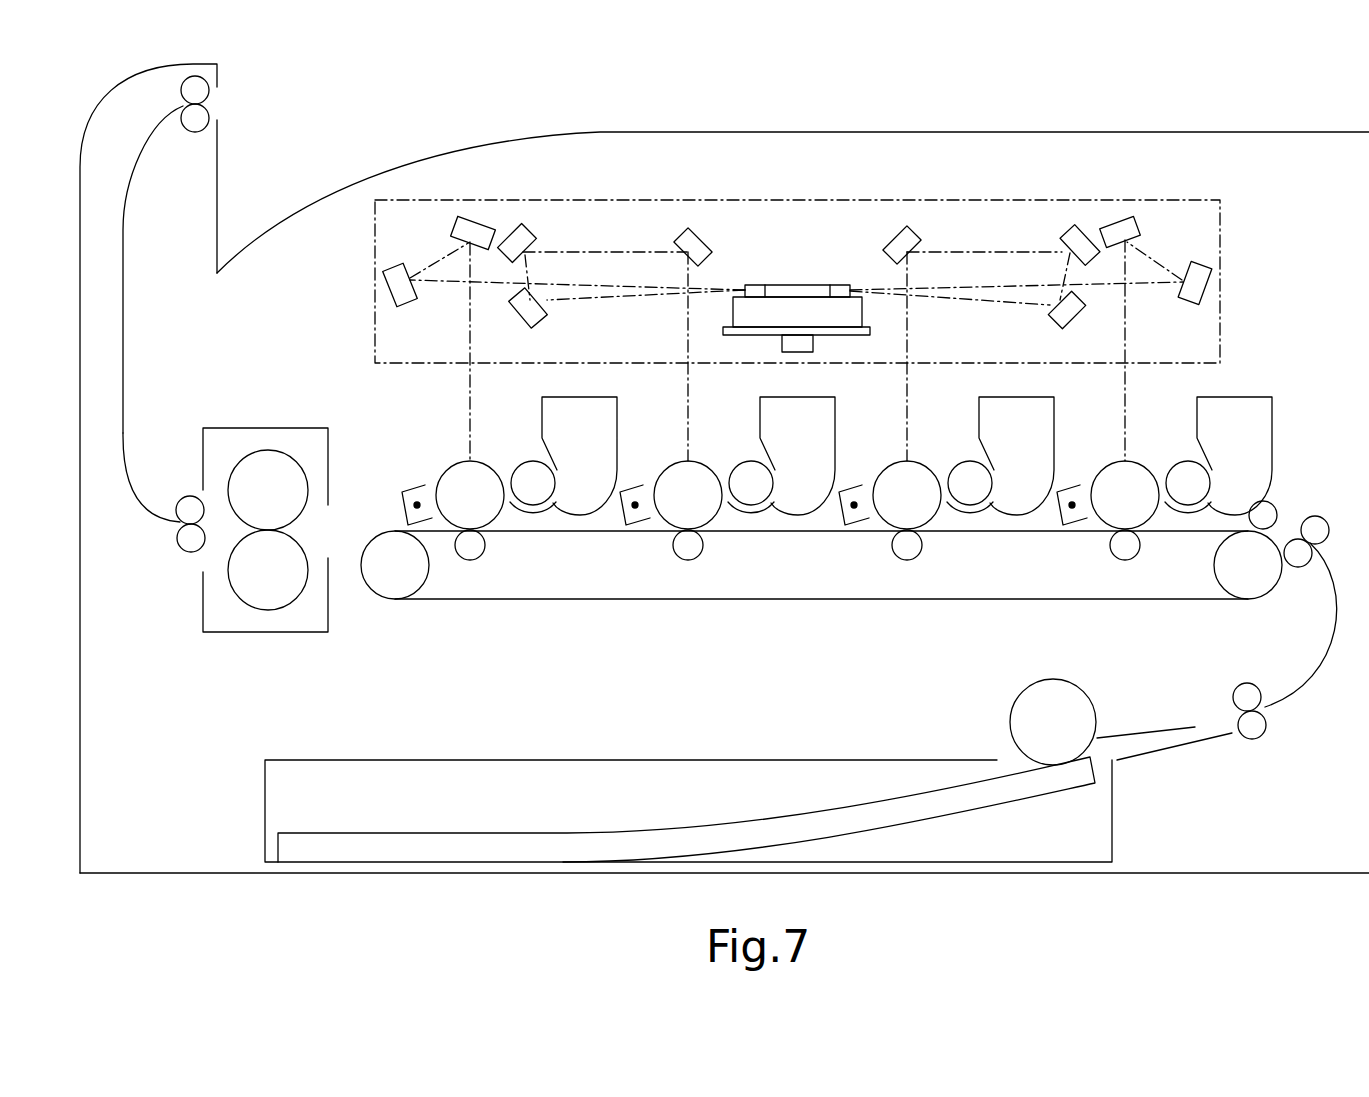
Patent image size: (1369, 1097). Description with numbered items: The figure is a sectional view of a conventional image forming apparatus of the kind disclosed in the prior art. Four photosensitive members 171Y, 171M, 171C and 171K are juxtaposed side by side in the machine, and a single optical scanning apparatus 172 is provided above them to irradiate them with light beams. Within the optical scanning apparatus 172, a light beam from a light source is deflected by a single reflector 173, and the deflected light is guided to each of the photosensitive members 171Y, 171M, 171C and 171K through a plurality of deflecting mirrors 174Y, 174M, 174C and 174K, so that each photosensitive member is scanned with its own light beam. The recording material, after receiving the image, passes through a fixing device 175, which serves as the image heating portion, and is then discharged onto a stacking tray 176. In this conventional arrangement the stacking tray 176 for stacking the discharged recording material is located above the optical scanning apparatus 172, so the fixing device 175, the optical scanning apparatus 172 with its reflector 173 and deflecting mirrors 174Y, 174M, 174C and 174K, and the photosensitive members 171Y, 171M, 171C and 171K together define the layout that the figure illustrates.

The photosensitive member 171K is at (453, 463).
The photosensitive member 171C is at (668, 462).
The photosensitive member 171M is at (877, 460).
The photosensitive member 171Y is at (1136, 460).
The optical scanning apparatus 172 is at (838, 198).
The reflector 173 is at (777, 284).
The deflecting mirror 174K is at (478, 217).
The deflecting mirror 174C is at (517, 227).
The deflecting mirror 174M is at (897, 227).
The deflecting mirror 174Y is at (1118, 217).
The fixing device 175 is at (250, 428).
The stacking tray 176 is at (327, 197).